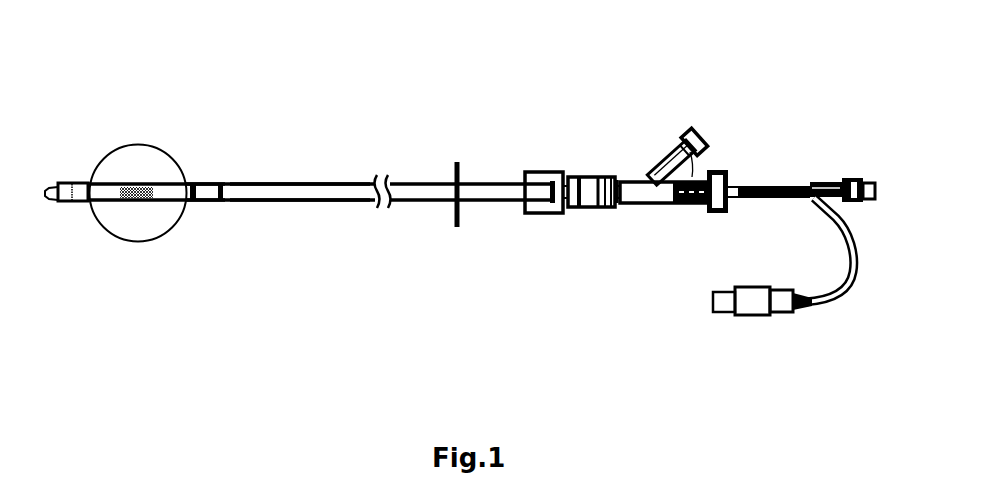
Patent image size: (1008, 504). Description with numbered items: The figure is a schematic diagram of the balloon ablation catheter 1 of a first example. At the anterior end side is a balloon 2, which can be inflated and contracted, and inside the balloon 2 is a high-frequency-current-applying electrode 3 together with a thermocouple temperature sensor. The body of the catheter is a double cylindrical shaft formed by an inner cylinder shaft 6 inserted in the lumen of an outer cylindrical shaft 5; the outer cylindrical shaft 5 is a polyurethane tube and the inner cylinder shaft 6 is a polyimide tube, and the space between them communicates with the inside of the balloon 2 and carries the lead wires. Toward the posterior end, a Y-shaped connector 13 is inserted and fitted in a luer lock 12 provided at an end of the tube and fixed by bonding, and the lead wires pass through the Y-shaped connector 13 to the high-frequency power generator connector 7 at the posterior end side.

The balloon ablation catheter 1 is at (419, 89).
The balloon 2 is at (147, 143).
The high-frequency-current-applying electrode 3 is at (130, 200).
The outer cylindrical shaft 5 is at (343, 202).
The inner cylinder shaft 6 is at (187, 180).
The high-frequency power generator connector 7 is at (752, 315).
The luer lock 12 is at (543, 170).
The Y-shaped connector 13 is at (660, 202).